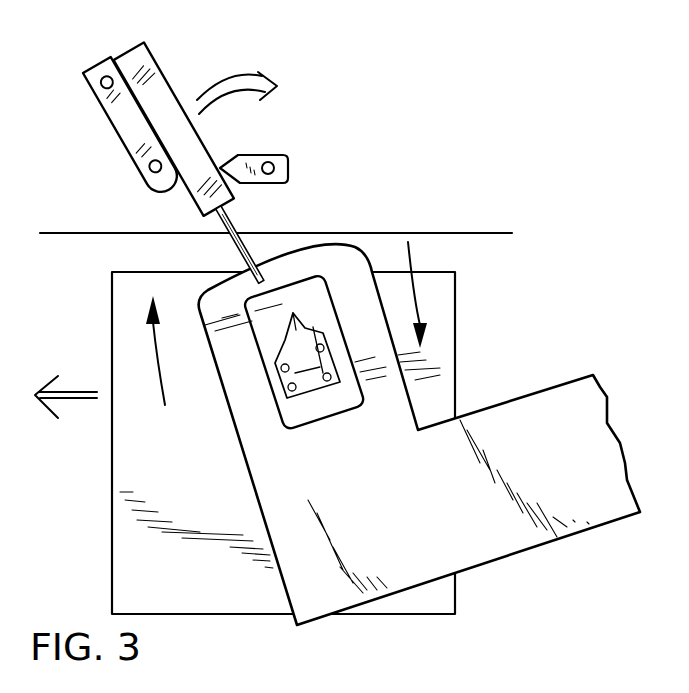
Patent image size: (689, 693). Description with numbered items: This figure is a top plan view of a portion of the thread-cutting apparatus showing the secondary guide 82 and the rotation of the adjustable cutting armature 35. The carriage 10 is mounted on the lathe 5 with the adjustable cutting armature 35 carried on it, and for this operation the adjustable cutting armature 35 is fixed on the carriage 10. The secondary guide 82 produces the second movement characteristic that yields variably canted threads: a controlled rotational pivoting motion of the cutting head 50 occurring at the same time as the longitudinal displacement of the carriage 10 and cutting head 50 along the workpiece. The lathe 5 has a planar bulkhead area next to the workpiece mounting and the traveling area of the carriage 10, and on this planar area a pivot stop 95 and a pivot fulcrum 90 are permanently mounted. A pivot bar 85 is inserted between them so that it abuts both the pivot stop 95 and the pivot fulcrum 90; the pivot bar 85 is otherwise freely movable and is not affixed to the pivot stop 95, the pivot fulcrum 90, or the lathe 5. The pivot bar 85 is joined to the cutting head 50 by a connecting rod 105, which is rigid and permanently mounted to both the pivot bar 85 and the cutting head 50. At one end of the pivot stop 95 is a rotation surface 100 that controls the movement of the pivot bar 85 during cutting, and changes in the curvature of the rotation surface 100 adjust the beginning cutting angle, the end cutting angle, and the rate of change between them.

The lathe 5 is at (448, 167).
The carriage 10 is at (220, 510).
The adjustable cutting armature 35 is at (378, 504).
The cutting head 50 is at (290, 407).
The secondary guide 82 is at (228, 57).
The pivot bar 85 is at (149, 64).
The pivot fulcrum 90 is at (288, 157).
The pivot stop 95 is at (124, 118).
The rotation surface 100 is at (173, 188).
The connecting rod 105 is at (235, 225).